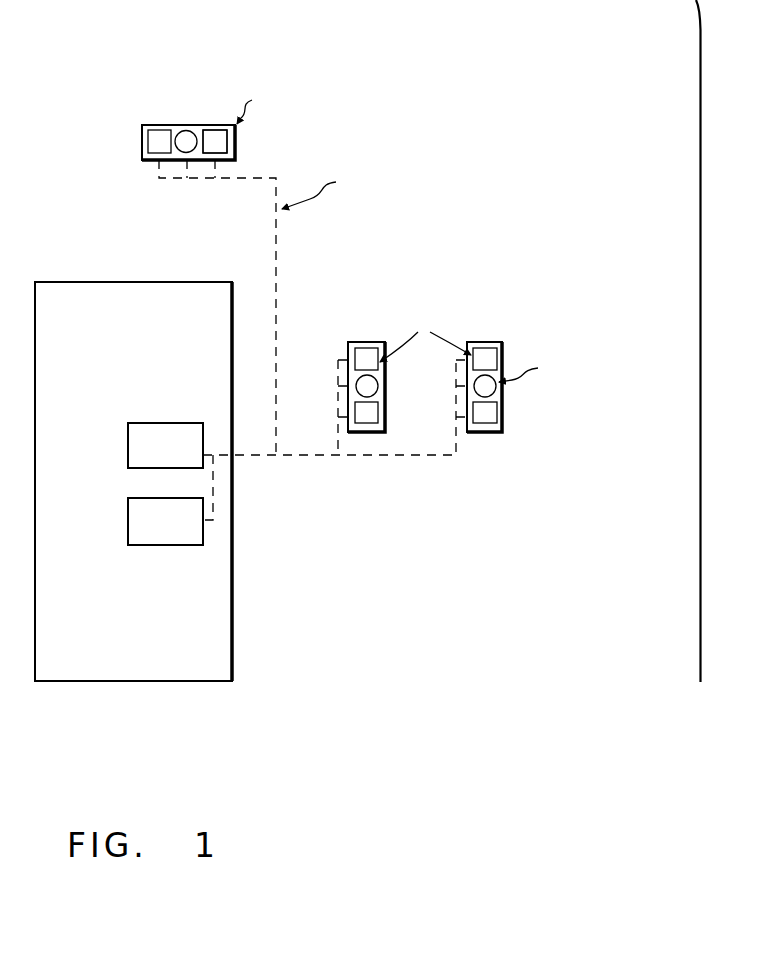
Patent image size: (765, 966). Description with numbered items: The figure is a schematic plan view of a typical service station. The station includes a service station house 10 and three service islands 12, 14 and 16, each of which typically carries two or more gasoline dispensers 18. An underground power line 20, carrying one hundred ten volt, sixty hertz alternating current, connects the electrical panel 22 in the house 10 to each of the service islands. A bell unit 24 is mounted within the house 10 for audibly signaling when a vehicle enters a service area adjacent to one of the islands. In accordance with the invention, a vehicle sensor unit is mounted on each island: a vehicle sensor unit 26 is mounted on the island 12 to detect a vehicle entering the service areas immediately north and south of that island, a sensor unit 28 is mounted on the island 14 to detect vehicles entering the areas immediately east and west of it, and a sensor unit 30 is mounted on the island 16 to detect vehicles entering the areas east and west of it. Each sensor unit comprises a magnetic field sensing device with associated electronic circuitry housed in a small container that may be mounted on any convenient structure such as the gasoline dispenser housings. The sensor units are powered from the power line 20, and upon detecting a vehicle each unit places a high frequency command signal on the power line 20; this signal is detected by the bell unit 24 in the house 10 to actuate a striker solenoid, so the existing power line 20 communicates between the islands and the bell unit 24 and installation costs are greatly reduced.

The service station house 10 is at (182, 280).
The service island 12 is at (144, 125).
The service island 14 is at (385, 420).
The service island 16 is at (502, 350).
The gasoline dispenser 18 is at (227, 147).
The underground power line 20 is at (277, 300).
The electrical panel 22 is at (128, 443).
The bell unit 24 is at (128, 519).
The vehicle sensor unit 26 is at (186, 130).
The sensor unit 28 is at (378, 386).
The sensor unit 30 is at (497, 393).